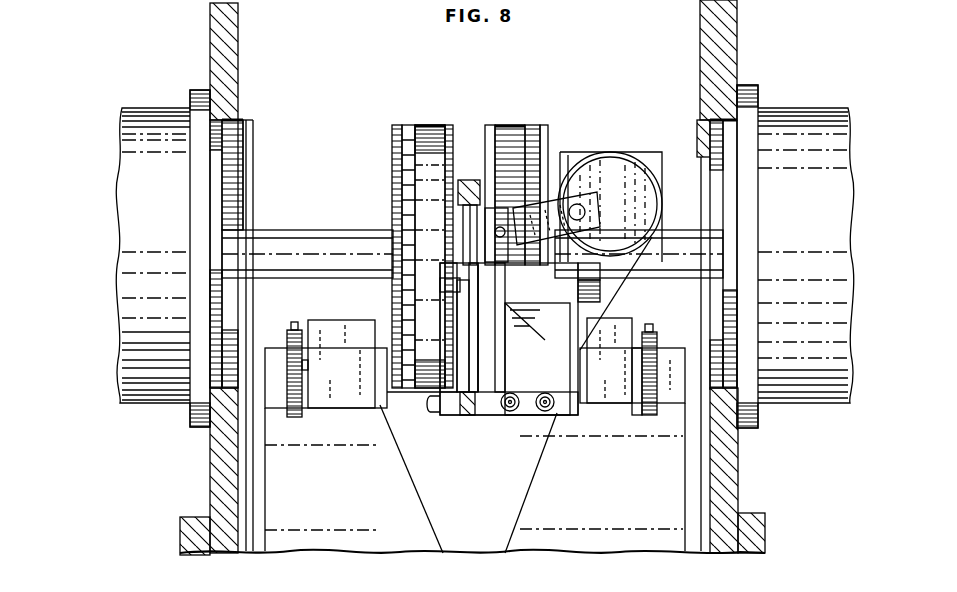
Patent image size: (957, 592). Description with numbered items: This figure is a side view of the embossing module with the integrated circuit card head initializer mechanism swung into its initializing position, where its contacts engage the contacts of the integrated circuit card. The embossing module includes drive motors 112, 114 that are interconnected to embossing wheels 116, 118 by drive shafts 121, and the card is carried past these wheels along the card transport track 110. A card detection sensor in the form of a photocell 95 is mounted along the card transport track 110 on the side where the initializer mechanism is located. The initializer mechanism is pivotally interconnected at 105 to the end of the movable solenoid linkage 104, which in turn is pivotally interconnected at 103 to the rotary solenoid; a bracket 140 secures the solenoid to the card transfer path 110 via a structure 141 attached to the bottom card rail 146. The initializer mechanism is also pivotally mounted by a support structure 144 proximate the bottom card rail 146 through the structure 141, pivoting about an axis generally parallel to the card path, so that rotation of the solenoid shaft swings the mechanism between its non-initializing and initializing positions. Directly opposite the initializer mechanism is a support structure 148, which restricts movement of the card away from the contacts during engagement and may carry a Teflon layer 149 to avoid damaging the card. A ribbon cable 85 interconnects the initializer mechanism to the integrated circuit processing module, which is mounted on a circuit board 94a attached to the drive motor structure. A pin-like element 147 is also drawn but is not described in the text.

The circuit board 94a is at (700, 35).
The embossing wheel 118 is at (447, 125).
The embossing wheel 116 is at (551, 125).
The pivotal interconnection 105 is at (487, 215).
The movable solenoid linkage 104 is at (549, 213).
The bracket 140 is at (568, 155).
The pivotal interconnection 103 is at (577, 206).
The pin 147 is at (458, 186).
The drive motor 112 is at (163, 216).
The drive motor 114 is at (818, 227).
The drive shaft 121 is at (322, 255).
The support structure 148 is at (445, 283).
The Teflon layer 149 is at (470, 297).
The ribbon cable 85 is at (607, 296).
The photocell 95 is at (455, 345).
The bottom card rail 146 is at (472, 422).
The card transport track 110 is at (482, 428).
The structure 141 is at (545, 417).
The support structure 144 is at (497, 418).